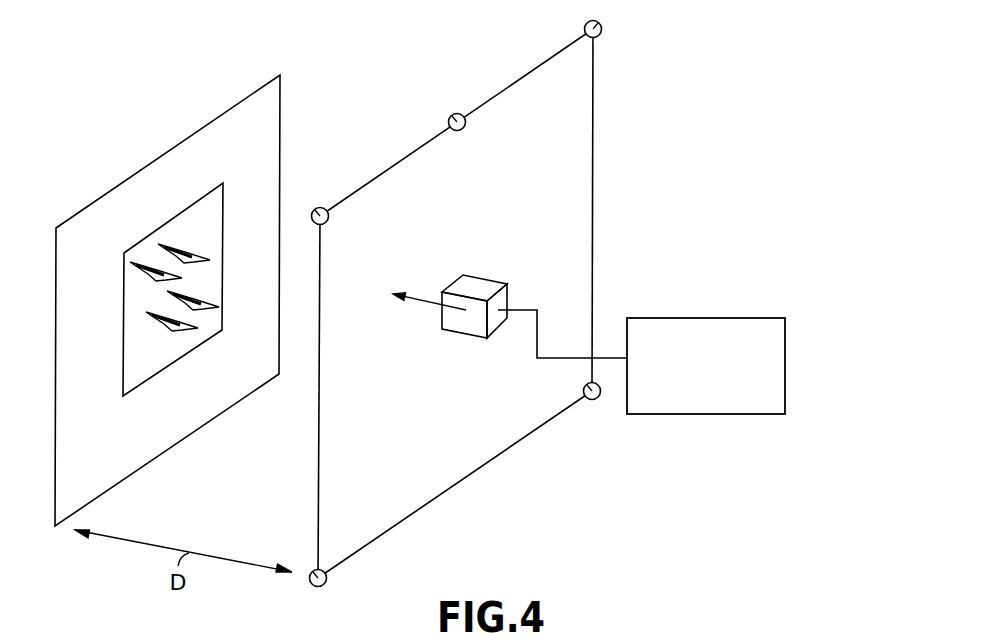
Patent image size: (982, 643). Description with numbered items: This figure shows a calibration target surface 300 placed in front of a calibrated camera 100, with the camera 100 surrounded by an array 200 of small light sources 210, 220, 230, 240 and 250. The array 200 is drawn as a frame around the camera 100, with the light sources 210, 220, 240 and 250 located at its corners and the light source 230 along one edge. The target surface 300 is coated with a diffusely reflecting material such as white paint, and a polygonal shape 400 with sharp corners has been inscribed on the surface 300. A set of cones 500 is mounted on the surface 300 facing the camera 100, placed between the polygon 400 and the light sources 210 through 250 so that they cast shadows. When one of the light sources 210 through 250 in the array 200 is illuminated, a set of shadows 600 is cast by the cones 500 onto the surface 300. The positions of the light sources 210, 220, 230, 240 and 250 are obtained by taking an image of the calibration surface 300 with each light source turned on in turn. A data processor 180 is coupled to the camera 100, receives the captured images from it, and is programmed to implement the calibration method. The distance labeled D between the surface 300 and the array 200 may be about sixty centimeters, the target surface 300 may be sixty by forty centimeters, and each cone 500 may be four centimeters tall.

The camera 100 is at (462, 337).
The data processor 180 is at (722, 415).
The array of light sources 200 is at (510, 83).
The light source 210 is at (597, 400).
The light source 220 is at (600, 22).
The light source 230 is at (453, 115).
The light source 240 is at (318, 208).
The light source 250 is at (322, 585).
The calibration target surface 300 is at (128, 180).
The polygonal shape 400 is at (122, 378).
The cones 500 is at (200, 302).
The shadows 600 is at (148, 277).